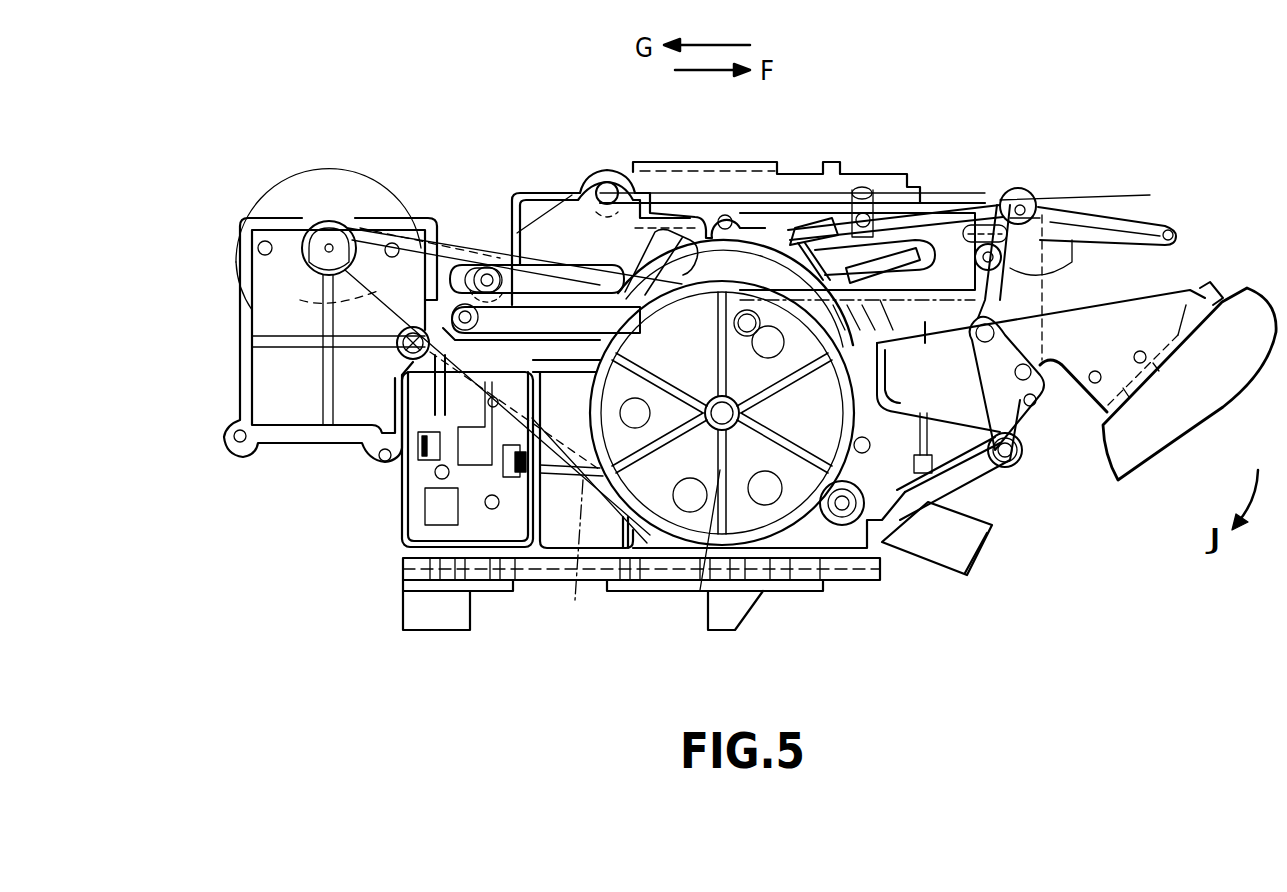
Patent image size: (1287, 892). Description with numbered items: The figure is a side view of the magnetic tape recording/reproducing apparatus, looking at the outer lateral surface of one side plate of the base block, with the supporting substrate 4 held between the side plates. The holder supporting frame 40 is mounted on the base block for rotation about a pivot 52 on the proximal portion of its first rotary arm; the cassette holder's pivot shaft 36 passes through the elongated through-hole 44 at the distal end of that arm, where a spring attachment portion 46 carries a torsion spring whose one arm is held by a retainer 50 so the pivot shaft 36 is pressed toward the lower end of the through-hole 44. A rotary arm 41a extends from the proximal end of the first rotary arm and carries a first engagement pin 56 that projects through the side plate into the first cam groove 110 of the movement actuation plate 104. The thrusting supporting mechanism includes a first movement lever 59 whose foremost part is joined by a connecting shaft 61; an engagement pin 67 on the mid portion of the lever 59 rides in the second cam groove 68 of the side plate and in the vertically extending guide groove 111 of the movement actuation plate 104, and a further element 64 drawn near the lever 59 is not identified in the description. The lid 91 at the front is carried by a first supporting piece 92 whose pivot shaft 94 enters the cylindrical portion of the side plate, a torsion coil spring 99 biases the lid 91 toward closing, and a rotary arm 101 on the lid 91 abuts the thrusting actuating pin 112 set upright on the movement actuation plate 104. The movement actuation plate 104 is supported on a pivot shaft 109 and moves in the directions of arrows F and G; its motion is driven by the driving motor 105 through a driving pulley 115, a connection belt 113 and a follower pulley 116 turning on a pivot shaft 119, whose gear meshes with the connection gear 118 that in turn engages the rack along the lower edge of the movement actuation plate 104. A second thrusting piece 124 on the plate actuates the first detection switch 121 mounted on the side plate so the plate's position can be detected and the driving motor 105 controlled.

The supporting substrate 4 is at (975, 555).
The pivot shaft 36 is at (905, 200).
The holder supporting frame 40 is at (732, 160).
The rotary arm 41a is at (548, 210).
The through-hole 44 is at (868, 212).
The spring attachment portion 46 is at (1003, 190).
The retainer 50 is at (830, 160).
The pivot 52 is at (605, 185).
The first engagement pin 56 is at (488, 270).
The first movement lever 59 is at (1118, 240).
The connecting shaft 61 is at (1170, 228).
The shaft 64 is at (1032, 198).
The engagement pin 67 is at (1003, 262).
The second cam groove 68 is at (835, 360).
The lid 91 is at (1172, 433).
The first supporting piece 92 is at (1215, 302).
The pivot shaft 94 is at (1012, 455).
The torsion coil spring 99 is at (1008, 470).
The rotary arm 101 is at (1040, 248).
The movement actuation plate 104 is at (450, 248).
The driving motor 105 is at (332, 185).
The pivot shaft 109 is at (405, 358).
The first cam groove 110 is at (655, 215).
The guide groove 111 is at (1055, 322).
The thrusting actuating pin 112 is at (1042, 212).
The connection belt 113 is at (567, 558).
The driving pulley 115 is at (310, 265).
The follower pulley 116 is at (718, 540).
The connection gear 118 is at (697, 245).
The pivot shaft 119 is at (832, 365).
The first detection switch 121 is at (475, 452).
The second thrusting piece 124 is at (438, 422).